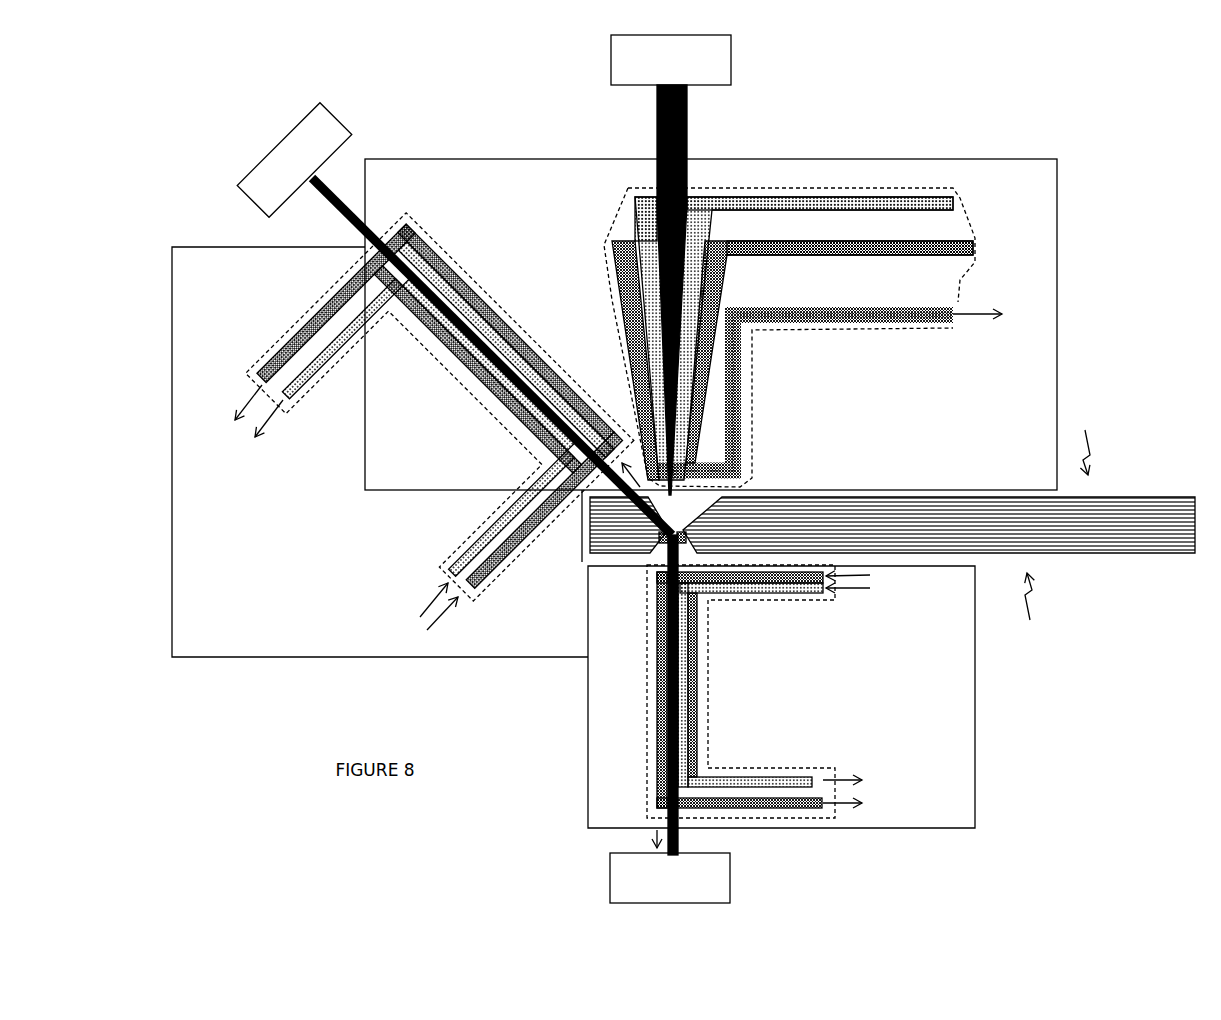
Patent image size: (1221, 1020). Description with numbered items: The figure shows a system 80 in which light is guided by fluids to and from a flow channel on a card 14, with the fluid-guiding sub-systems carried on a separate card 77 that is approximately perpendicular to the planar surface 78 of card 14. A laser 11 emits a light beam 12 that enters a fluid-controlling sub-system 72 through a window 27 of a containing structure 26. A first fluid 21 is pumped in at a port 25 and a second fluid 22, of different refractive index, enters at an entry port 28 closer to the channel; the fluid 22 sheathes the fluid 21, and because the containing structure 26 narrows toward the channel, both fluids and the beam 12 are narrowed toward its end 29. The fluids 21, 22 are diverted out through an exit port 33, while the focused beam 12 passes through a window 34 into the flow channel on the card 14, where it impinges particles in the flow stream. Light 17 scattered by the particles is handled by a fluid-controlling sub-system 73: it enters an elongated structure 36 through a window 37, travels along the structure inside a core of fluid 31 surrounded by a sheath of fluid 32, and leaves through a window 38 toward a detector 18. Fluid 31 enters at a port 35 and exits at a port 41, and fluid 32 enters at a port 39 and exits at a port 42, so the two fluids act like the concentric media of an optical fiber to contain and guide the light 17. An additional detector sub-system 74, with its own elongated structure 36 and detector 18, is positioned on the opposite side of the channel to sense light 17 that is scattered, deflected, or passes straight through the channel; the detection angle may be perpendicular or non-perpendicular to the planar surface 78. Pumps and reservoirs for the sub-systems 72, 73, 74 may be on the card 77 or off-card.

The laser 11 is at (740, 55).
The light beam 12 is at (687, 130).
The card 14 is at (1120, 497).
The scattered light 17 is at (353, 210).
The detector 18 is at (352, 133).
The fluid 21 is at (955, 203).
The second layer of fluid 22 is at (623, 313).
The port 25 is at (800, 197).
The containing structure 26 is at (697, 197).
The window 27 is at (657, 192).
The entry port 28 is at (760, 241).
The end 29 is at (658, 447).
The fluid 31 is at (283, 398).
The fluid 32 is at (263, 382).
The exit port 33 is at (905, 323).
The window 34 is at (700, 487).
The port 35 is at (507, 500).
The elongated structure 36 is at (510, 327).
The window 37 is at (587, 463).
The window 38 is at (380, 250).
The port 39 is at (523, 540).
The port 41 is at (357, 353).
The port 42 is at (310, 327).
The fluid-controlling sub-system 72 is at (752, 340).
The fluid-controlling sub-system 73 is at (535, 468).
The detector sub-system 74 is at (710, 737).
The card 77 is at (1058, 370).
The planar surface 78 is at (1057, 524).
The system 80 is at (463, 138).